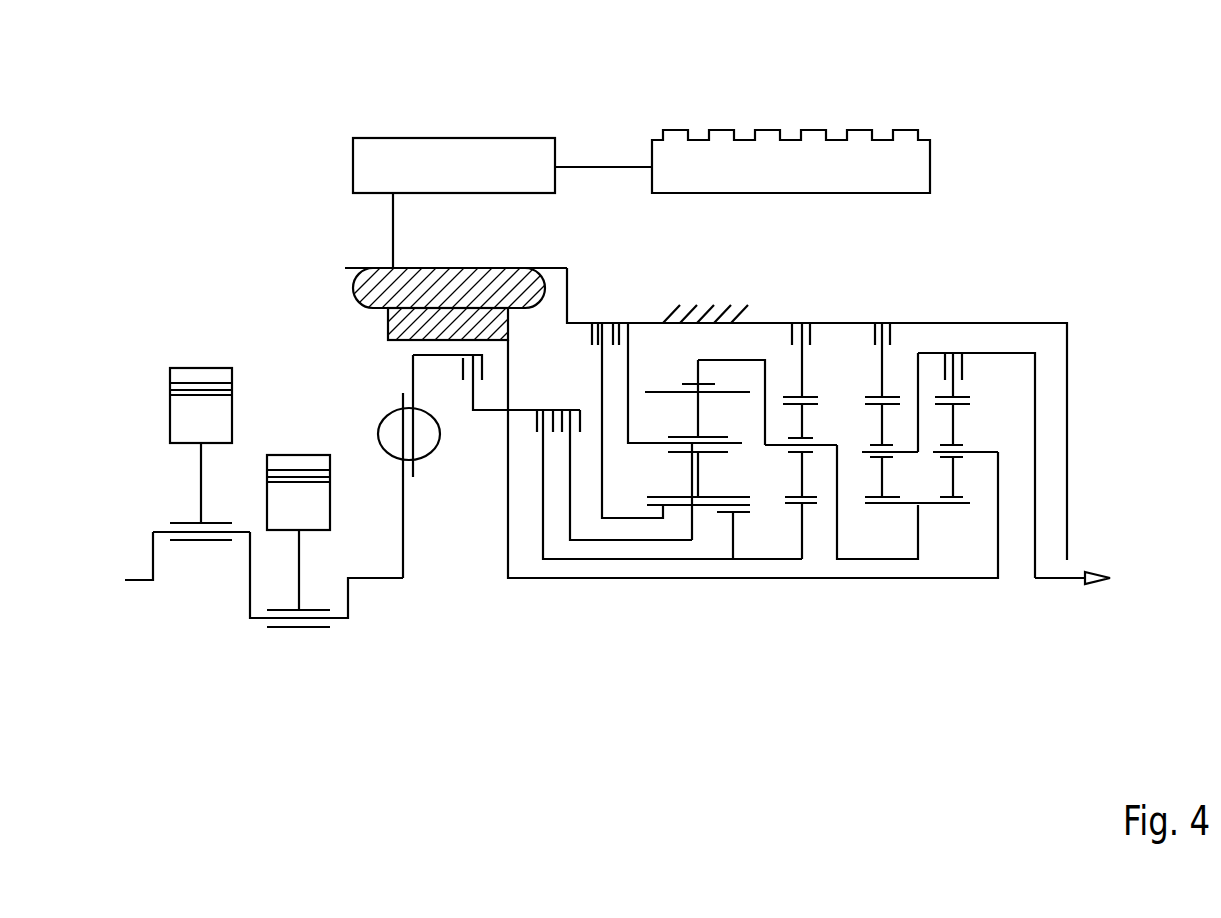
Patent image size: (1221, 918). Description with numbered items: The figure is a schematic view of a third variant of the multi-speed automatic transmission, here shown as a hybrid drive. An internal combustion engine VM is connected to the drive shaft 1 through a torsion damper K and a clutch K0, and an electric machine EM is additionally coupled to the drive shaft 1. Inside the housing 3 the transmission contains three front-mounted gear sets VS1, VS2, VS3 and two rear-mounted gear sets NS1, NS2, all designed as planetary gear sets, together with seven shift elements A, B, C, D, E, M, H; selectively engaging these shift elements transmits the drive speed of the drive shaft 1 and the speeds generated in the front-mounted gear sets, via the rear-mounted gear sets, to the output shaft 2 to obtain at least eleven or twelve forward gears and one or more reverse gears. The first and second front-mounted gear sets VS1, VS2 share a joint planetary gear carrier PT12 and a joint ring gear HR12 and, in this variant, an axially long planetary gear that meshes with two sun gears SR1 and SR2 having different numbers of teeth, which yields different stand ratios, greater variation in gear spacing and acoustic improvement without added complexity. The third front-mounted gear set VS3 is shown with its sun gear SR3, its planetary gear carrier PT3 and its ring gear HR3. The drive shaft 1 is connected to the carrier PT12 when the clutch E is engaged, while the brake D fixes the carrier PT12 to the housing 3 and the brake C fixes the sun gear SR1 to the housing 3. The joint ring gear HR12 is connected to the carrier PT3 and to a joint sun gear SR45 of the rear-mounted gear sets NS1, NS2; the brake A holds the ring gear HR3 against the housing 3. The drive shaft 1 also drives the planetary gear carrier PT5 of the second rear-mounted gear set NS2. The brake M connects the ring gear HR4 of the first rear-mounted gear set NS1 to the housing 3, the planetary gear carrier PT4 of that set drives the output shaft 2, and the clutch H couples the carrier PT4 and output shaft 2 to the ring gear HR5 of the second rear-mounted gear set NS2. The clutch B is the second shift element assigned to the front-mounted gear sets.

The internal combustion engine VM is at (233, 333).
The torsion damper K is at (383, 395).
The electric machine EM is at (457, 243).
The clutch K0 is at (460, 339).
The drive shaft 1 is at (490, 413).
The output shaft 2 is at (1037, 530).
The housing 3 is at (722, 307).
The joint ring gear HR12 is at (688, 380).
The ring gear of the third front-mounted gear set HR3 is at (810, 392).
The ring gear of the first rear-mounted gear set HR4 is at (888, 392).
The ring gear of the second rear-mounted gear set HR5 is at (963, 392).
The joint planetary gear carrier PT12 is at (660, 452).
The planetary gear carrier of the third front-mounted gear set PT3 is at (790, 460).
The planetary gear carrier of the first rear-mounted gear set PT4 is at (902, 458).
The planetary gear carrier of the second rear-mounted gear set PT5 is at (963, 432).
The sun gear of the first front-mounted gear set SR1 is at (653, 507).
The sun gear of the second front-mounted gear set SR2 is at (730, 515).
The sun gear of third planetary gear set SR3 is at (808, 495).
The joint sun gear SR45 is at (927, 507).
The first front-mounted gear set VS1 is at (663, 588).
The second front-mounted gear set VS2 is at (732, 588).
The third front-mounted gear set VS3 is at (800, 588).
The first rear-mounted gear set NS1 is at (883, 588).
The second rear-mounted gear set NS2 is at (953, 588).
The first shift element A is at (801, 342).
The second shift element B is at (669, 467).
The third shift element C is at (627, 403).
The fourth shift element D is at (677, 365).
The fifth shift element E is at (622, 458).
The sixth shift element M is at (882, 342).
The seventh shift element H is at (953, 357).